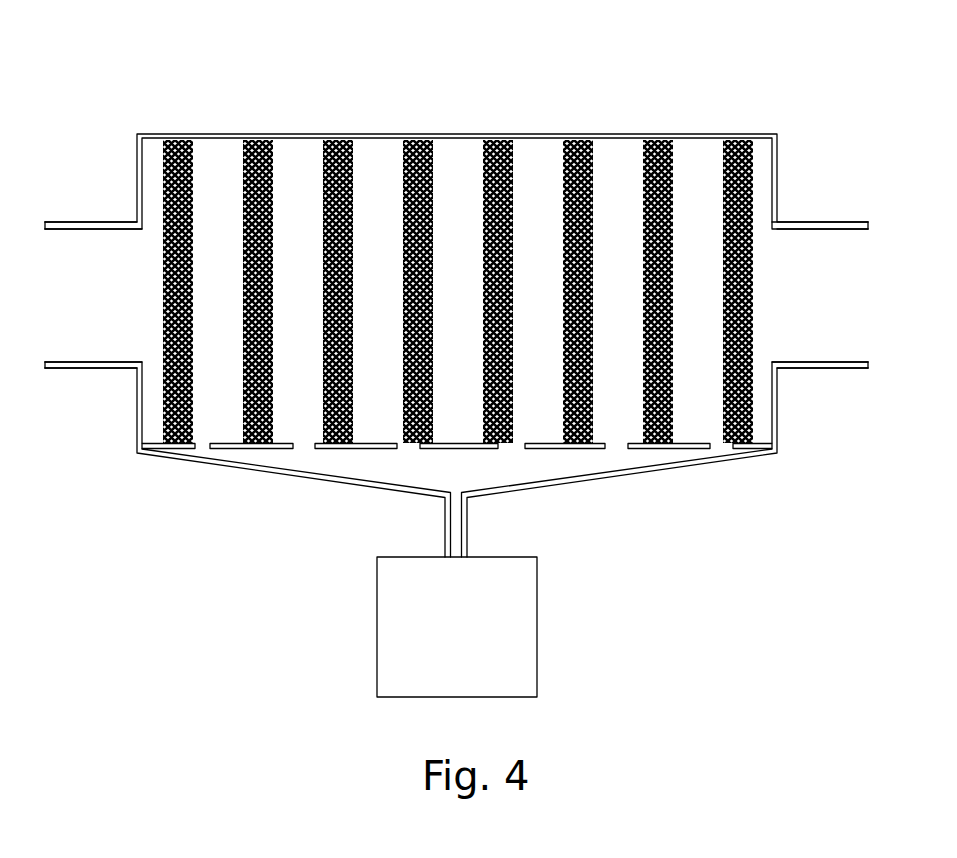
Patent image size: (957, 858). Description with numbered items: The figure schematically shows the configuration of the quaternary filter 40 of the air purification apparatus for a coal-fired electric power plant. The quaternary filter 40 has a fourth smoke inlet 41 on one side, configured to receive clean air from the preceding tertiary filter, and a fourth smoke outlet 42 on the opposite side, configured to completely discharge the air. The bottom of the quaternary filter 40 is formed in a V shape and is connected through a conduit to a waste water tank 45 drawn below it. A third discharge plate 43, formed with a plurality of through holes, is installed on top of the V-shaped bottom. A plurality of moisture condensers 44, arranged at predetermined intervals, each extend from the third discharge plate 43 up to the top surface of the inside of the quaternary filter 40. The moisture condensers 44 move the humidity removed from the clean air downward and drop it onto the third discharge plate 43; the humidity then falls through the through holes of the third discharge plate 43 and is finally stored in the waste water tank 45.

The quaternary filter 40 is at (723, 44).
The fourth smoke inlet 41 is at (97, 272).
The fourth smoke outlet 42 is at (832, 285).
The third discharge plate 43 is at (648, 450).
The moisture condensers 44 is at (433, 162).
The waste water tank 45 is at (537, 626).